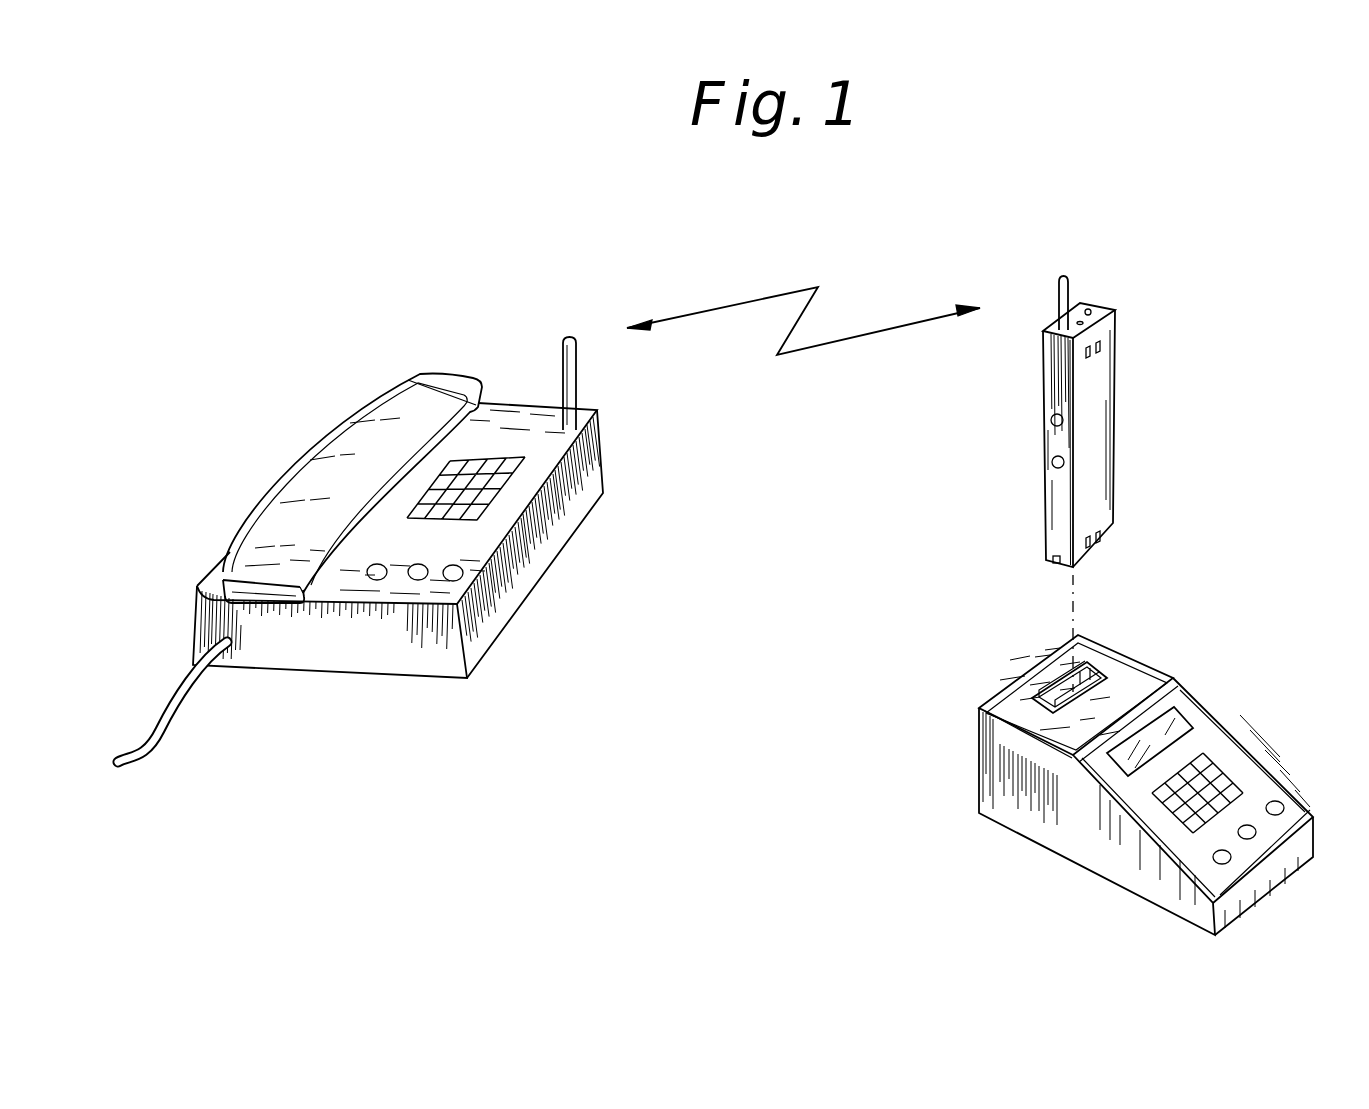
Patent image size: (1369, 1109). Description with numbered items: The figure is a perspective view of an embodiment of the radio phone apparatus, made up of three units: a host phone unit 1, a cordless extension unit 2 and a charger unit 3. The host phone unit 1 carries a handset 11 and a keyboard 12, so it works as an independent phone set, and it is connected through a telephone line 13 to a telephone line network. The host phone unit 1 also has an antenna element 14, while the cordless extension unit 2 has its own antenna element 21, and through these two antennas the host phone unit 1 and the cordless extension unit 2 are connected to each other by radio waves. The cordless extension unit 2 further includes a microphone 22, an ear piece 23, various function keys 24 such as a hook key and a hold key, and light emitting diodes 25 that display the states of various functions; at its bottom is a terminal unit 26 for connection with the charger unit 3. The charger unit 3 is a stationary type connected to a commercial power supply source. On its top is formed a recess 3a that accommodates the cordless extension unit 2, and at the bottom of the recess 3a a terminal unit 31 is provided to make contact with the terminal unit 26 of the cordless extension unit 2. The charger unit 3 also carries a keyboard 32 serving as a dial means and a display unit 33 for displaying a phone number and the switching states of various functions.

The host phone unit 1 is at (408, 682).
The handset 11 is at (310, 470).
The keyboard 12 is at (490, 497).
The telephone line 13 is at (153, 725).
The antenna element 14 is at (560, 359).
The cordless extension unit 2 is at (1125, 452).
The antenna element 21 is at (1058, 290).
The microphone 22 is at (1113, 523).
The ear piece 23 is at (1108, 332).
The function keys 24 is at (1052, 462).
The light emitting diodes 25 is at (1089, 308).
The terminal unit 26 is at (1047, 555).
The charger unit 3 is at (1058, 866).
The recess 3a is at (993, 718).
The terminal unit 31 is at (1097, 675).
The keyboard 32 is at (1233, 788).
The display unit 33 is at (1177, 728).